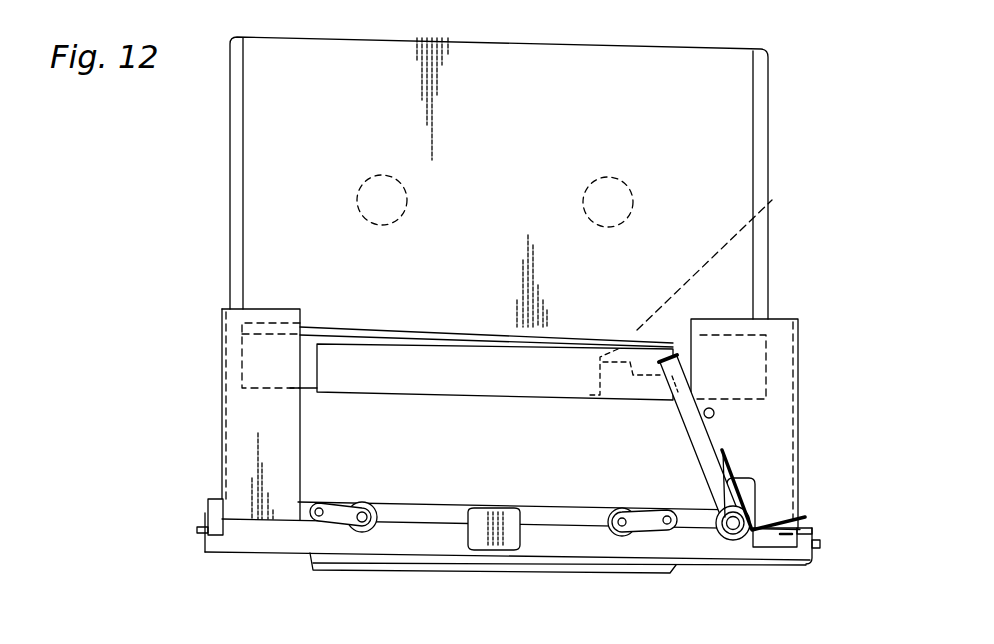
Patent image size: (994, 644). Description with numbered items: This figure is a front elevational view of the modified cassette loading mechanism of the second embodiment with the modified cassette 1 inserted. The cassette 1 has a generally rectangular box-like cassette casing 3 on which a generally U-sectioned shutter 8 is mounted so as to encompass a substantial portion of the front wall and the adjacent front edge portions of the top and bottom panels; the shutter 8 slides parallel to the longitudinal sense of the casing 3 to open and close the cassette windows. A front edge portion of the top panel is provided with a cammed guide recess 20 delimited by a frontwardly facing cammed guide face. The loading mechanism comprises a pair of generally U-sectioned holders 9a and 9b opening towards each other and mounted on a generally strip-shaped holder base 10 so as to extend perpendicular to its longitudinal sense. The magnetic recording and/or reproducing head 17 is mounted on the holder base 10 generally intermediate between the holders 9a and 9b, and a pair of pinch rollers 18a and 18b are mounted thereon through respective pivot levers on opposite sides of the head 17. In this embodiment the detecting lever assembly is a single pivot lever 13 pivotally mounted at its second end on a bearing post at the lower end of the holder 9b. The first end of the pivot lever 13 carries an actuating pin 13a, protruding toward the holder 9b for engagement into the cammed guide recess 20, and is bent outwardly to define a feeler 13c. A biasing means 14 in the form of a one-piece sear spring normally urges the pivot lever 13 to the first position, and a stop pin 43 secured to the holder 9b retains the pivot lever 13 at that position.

The modified cassette 1 is at (772, 127).
The cassette casing 3 is at (515, 120).
The shutter 8 is at (463, 378).
The holder 9a is at (242, 427).
The holder 9b is at (765, 440).
The holder base 10 is at (405, 515).
The pivot lever 13 is at (703, 447).
The actuating pin 13a is at (713, 370).
The feeler 13c is at (690, 357).
The biasing means 14 is at (725, 495).
The magnetic recording and/or reproducing head 17 is at (490, 552).
The pinch roller 18a is at (620, 537).
The pinch roller 18b is at (360, 533).
The cammed guide recess 20 is at (772, 202).
The stop pin 43 is at (713, 410).